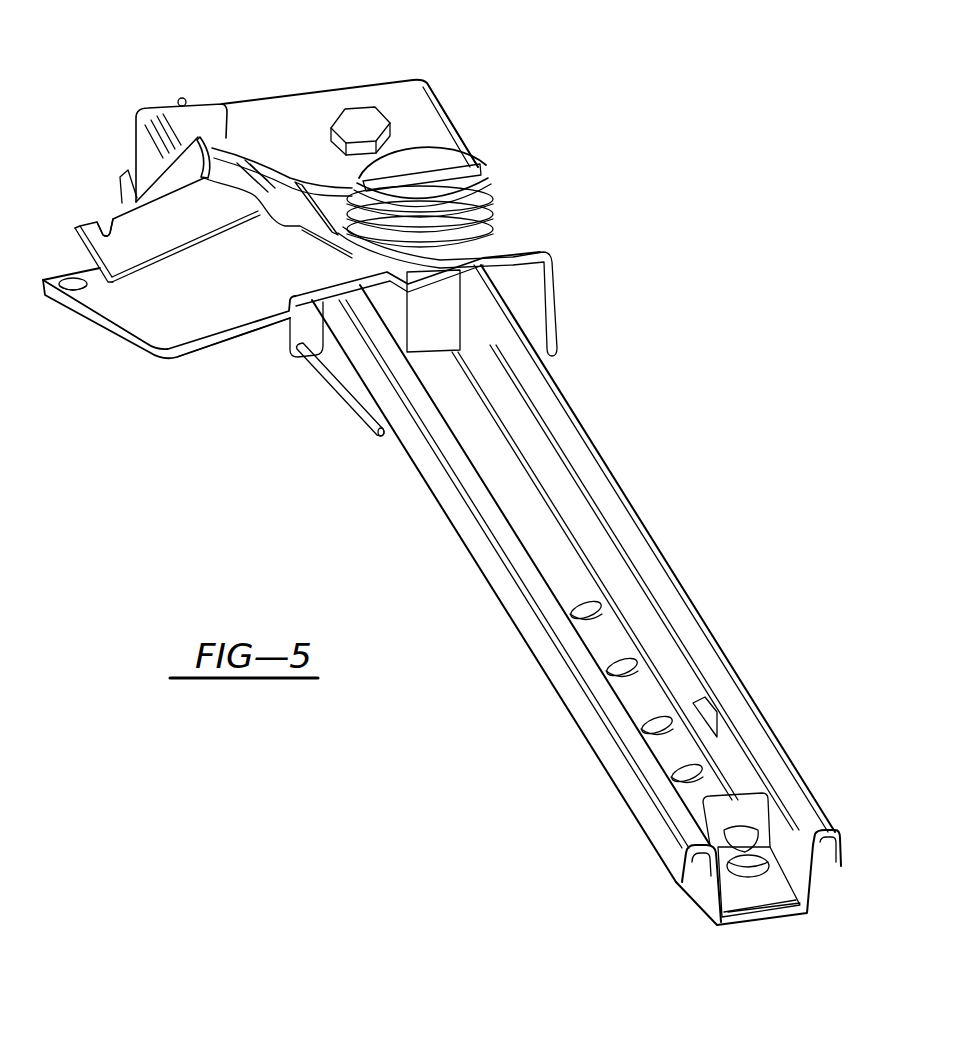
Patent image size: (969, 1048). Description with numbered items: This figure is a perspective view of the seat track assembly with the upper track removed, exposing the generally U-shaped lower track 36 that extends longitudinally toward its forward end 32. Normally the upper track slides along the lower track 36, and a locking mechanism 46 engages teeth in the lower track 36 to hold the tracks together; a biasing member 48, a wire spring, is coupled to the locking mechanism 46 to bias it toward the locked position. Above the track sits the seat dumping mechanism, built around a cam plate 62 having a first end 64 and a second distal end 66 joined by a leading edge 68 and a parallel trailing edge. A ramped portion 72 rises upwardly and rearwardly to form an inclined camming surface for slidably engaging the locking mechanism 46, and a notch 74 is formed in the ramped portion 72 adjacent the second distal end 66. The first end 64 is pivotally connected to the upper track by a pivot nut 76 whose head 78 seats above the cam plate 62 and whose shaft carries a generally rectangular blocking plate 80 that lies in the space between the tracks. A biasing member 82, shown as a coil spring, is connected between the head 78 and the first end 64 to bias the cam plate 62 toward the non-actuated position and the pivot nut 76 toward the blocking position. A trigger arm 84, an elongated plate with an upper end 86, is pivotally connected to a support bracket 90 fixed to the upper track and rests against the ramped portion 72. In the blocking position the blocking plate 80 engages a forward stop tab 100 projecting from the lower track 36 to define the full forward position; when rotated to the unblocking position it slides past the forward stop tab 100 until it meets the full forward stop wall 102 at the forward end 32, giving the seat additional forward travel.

The forward end 32 is at (713, 930).
The lower track 36 is at (627, 520).
The locking mechanism 46 is at (280, 335).
The biasing member 48 is at (364, 410).
The cam plate 62 is at (252, 292).
The first end 64 is at (497, 245).
The second distal end 66 is at (113, 337).
The leading edge 68 is at (210, 353).
The ramped portion 72 is at (192, 228).
The notch 74 is at (103, 220).
The pivot nut 76 is at (472, 141).
The head 78 is at (424, 160).
The blocking plate 80 is at (440, 335).
The biasing member 82 is at (498, 189).
The trigger arm 84 is at (150, 172).
The upper end 86 is at (221, 137).
The support bracket 90 is at (418, 98).
The forward stop tab 100 is at (700, 712).
The full forward stop wall 102 is at (756, 800).